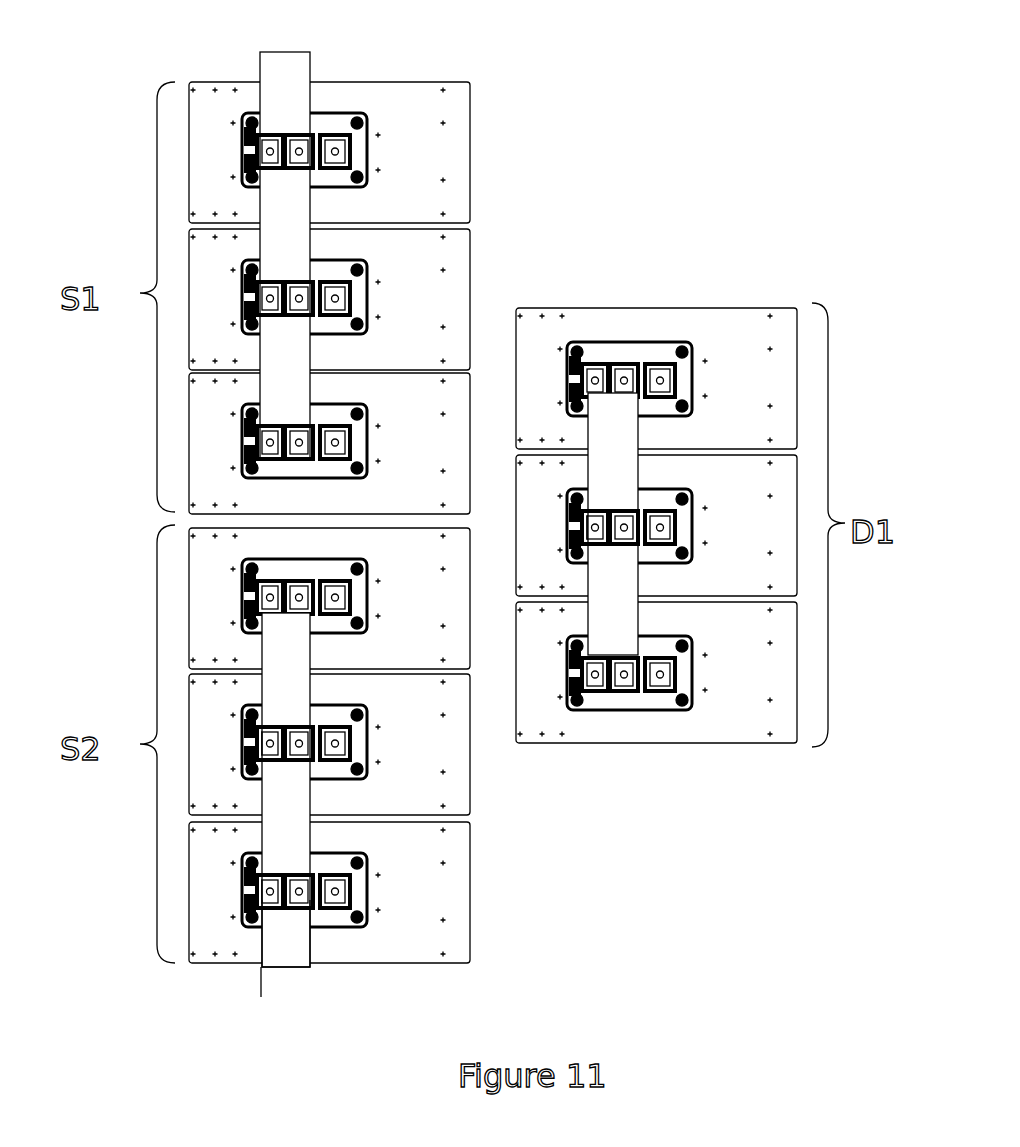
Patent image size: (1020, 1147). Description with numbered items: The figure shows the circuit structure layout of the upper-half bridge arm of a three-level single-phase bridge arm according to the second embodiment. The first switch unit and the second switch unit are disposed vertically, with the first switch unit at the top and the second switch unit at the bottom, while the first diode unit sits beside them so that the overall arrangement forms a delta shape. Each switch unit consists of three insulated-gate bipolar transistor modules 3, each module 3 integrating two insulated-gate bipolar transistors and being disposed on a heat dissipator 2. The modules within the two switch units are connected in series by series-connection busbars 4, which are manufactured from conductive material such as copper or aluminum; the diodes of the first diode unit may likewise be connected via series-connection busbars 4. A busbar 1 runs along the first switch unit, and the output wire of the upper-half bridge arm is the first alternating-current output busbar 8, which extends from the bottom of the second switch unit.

The first bus bar 1 is at (280, 110).
The heat dissipator 2 is at (435, 147).
The insulated-gate bipolar transistor module 3 is at (352, 290).
The series-connection busbar 4 is at (282, 841).
The first alternating-current output busbar 8 is at (282, 945).